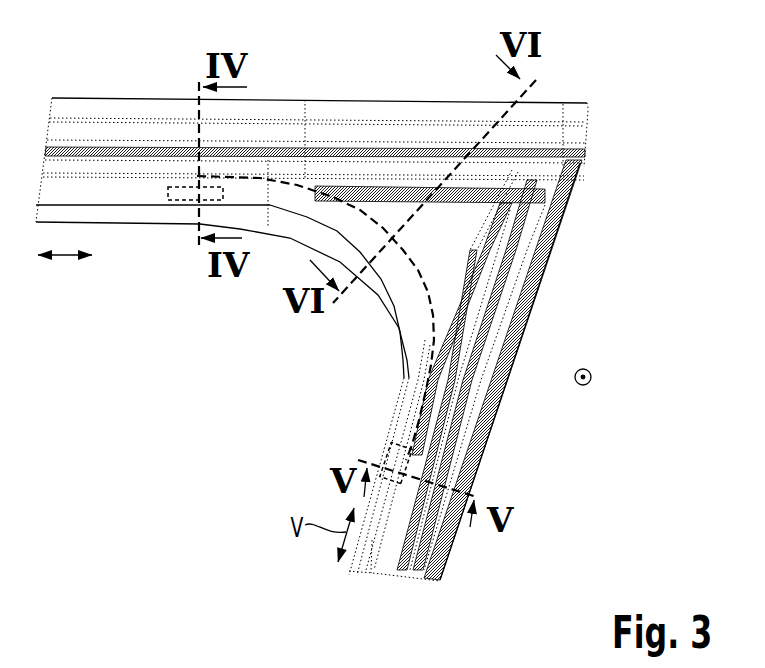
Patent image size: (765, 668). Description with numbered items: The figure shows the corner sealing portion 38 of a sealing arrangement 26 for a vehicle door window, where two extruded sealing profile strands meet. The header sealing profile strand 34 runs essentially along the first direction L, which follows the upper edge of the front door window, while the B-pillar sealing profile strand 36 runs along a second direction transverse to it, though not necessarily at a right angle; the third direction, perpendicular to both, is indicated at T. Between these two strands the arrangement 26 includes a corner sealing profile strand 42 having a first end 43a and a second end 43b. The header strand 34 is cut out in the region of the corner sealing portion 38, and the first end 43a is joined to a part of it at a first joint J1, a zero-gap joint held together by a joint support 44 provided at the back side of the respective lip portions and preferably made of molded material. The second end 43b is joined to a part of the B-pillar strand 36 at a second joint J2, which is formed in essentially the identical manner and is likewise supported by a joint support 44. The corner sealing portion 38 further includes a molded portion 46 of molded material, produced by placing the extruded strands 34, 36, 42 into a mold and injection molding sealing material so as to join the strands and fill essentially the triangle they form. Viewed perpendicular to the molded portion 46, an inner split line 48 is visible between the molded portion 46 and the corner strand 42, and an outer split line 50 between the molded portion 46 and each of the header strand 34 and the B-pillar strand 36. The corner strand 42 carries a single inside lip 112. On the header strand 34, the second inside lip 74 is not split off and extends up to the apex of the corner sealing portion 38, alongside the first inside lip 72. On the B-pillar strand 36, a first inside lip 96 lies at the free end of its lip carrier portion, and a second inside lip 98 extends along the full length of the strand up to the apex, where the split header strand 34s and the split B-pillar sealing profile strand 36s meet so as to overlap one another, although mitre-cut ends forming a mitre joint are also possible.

The sealing arrangement 26 is at (357, 322).
The header sealing profile strand 34 is at (331, 124).
The surface of first belt portion 34s is at (463, 78).
The B-pillar sealing profile strand 36 is at (490, 399).
The split B-pillar sealing profile strand 36s is at (546, 280).
The corner sealing portion 38 is at (315, 375).
The corner sealing profile strand 42 is at (362, 222).
The first end 43a is at (250, 190).
The second end 43b is at (412, 427).
The joint support 44 is at (175, 188).
The molded portion 46 is at (457, 247).
The inner split line 48 is at (430, 293).
The outer split line 50 is at (417, 200).
The layer 72 is at (72, 192).
The second inside lip 74 is at (490, 167).
The first inside lip 96 is at (372, 557).
The second inside lip 98 is at (517, 188).
The single inside lip 112 is at (413, 303).
The first joint J1 is at (196, 212).
The second joint J2 is at (390, 458).
The first direction L is at (64, 262).
The third direction T is at (592, 377).